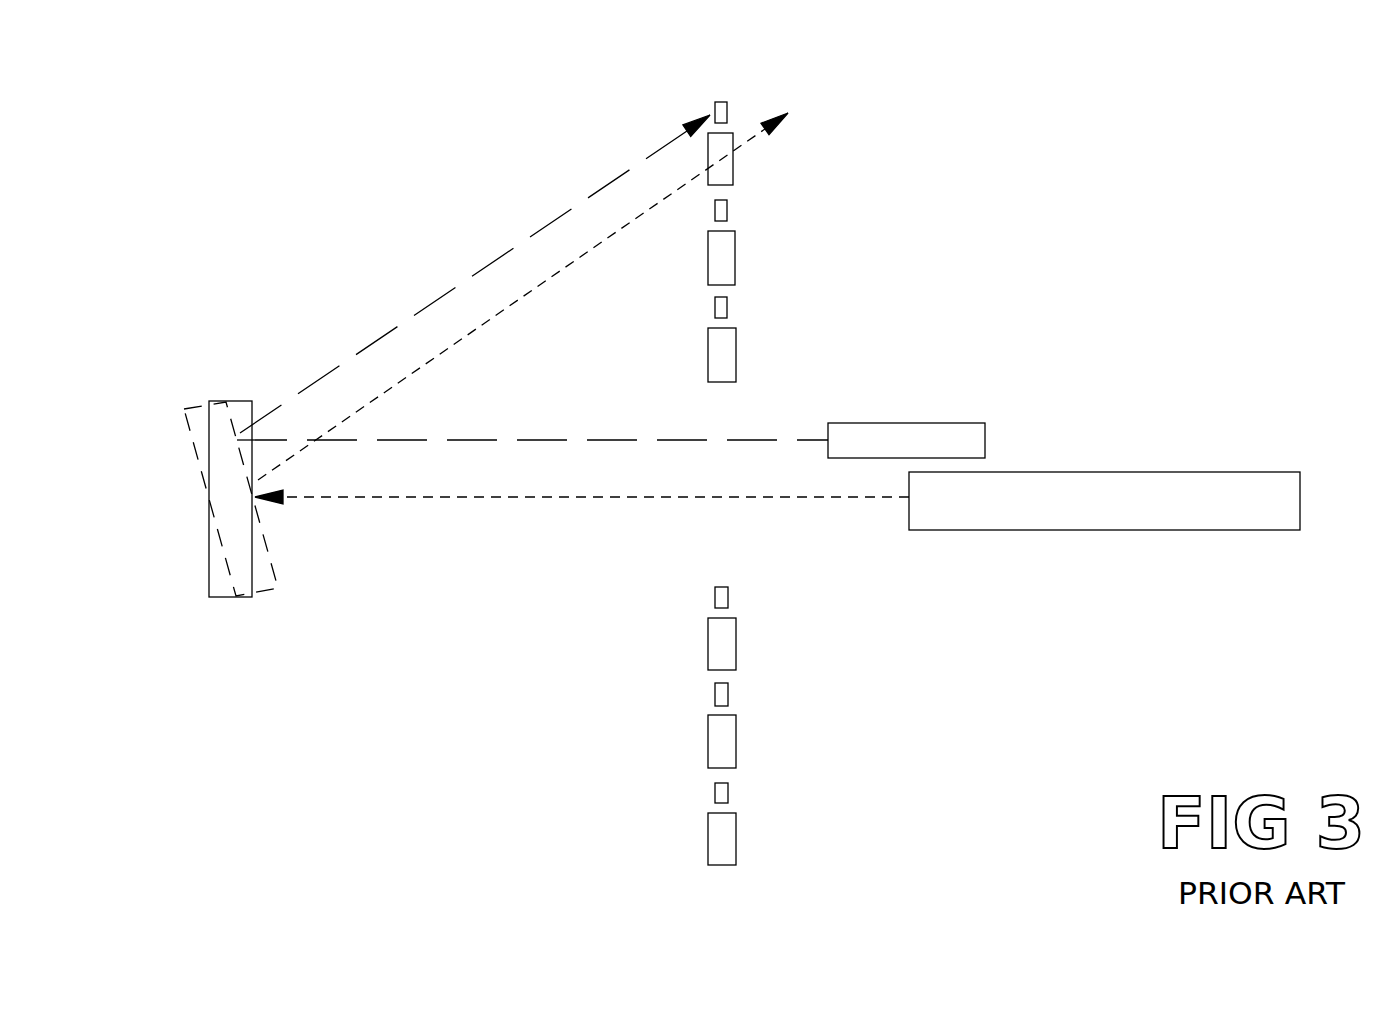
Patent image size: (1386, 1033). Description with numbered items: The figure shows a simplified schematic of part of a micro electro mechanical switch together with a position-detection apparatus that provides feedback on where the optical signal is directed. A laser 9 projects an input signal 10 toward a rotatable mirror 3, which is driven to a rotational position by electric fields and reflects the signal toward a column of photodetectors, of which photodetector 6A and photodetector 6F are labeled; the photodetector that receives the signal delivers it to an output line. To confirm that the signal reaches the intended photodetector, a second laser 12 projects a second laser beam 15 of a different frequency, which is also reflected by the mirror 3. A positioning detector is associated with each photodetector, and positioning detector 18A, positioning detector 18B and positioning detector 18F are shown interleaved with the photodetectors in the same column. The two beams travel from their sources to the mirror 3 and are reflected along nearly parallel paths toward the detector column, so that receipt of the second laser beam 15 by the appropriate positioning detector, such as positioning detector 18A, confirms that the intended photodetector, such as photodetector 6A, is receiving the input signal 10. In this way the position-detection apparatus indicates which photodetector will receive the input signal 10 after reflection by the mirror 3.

The mirror 3 is at (210, 553).
The second laser beam 15 is at (527, 440).
The input signal 10 is at (583, 497).
The second laser 12 is at (905, 423).
The laser 9 is at (1105, 472).
The photodetector 6A is at (735, 163).
The photodetector 6F is at (736, 838).
The positioning detector 18A is at (728, 107).
The positioning detector 18B is at (728, 207).
The positioning detector 18F is at (728, 791).